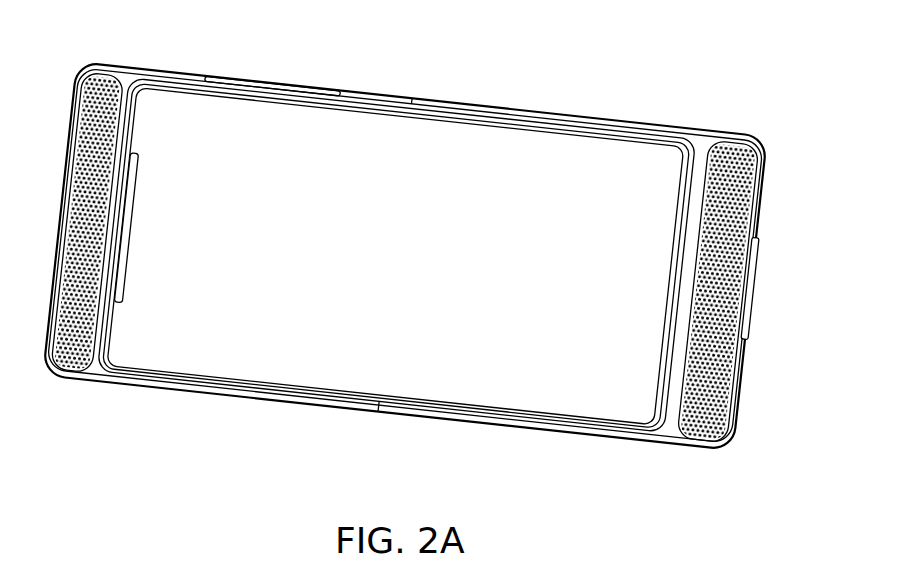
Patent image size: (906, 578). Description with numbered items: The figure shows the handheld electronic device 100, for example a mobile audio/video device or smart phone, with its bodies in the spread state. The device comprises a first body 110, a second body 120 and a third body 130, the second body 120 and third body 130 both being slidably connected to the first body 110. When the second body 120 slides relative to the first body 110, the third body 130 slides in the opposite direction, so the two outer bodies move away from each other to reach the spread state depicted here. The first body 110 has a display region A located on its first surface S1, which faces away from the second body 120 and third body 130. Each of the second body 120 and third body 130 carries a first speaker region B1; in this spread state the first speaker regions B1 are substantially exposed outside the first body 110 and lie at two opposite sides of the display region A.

The handheld electronic device 100 is at (600, 47).
The first body 110 is at (533, 428).
The second body 120 is at (97, 66).
The third body 130 is at (732, 134).
The first surface S1 is at (176, 87).
The first speaker region B1 is at (92, 231).
The display region A is at (266, 360).